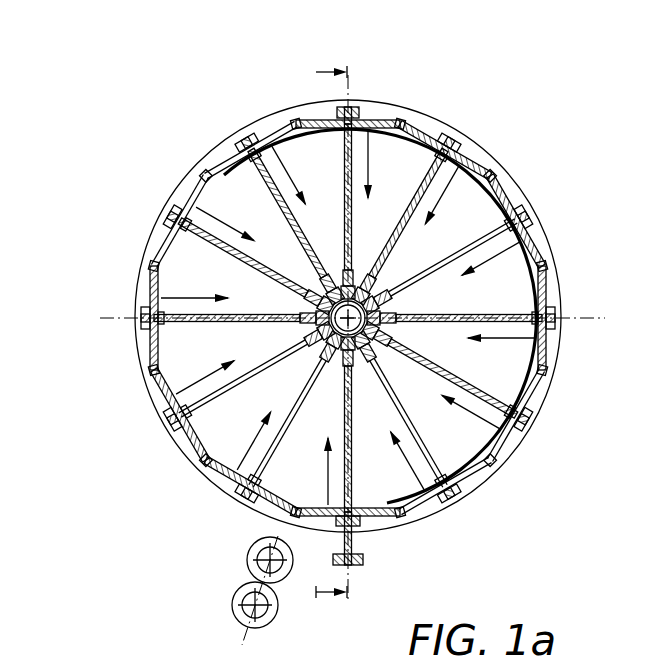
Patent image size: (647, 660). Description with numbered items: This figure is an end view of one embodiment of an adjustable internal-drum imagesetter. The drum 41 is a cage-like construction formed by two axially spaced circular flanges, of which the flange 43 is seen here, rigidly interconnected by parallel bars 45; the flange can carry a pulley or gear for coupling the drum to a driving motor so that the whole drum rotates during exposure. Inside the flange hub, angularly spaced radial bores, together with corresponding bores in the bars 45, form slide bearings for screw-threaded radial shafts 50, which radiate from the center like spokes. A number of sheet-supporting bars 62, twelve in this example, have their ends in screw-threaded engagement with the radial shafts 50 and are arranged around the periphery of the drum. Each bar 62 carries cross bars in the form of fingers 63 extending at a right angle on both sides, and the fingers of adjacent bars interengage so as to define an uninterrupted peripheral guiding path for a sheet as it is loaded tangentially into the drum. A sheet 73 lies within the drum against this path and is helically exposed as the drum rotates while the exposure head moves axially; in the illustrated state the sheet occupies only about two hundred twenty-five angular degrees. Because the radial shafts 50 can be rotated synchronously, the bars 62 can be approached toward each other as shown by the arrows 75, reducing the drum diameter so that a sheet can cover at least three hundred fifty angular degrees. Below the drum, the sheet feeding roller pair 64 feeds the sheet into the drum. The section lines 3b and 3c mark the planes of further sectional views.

The drum 41 is at (443, 96).
The circular flange 43 is at (526, 191).
The parallel bars 45 is at (386, 318).
The screw-threaded radial shaft 50 is at (348, 312).
The sheet-supporting bar 62 is at (348, 296).
The fingers 63 is at (423, 316).
The sheet 73 is at (384, 317).
The arrows 75 is at (348, 297).
The sheet feeding roller pair 64 is at (226, 567).
The section line 3b is at (315, 341).
The section line 3c is at (230, 629).